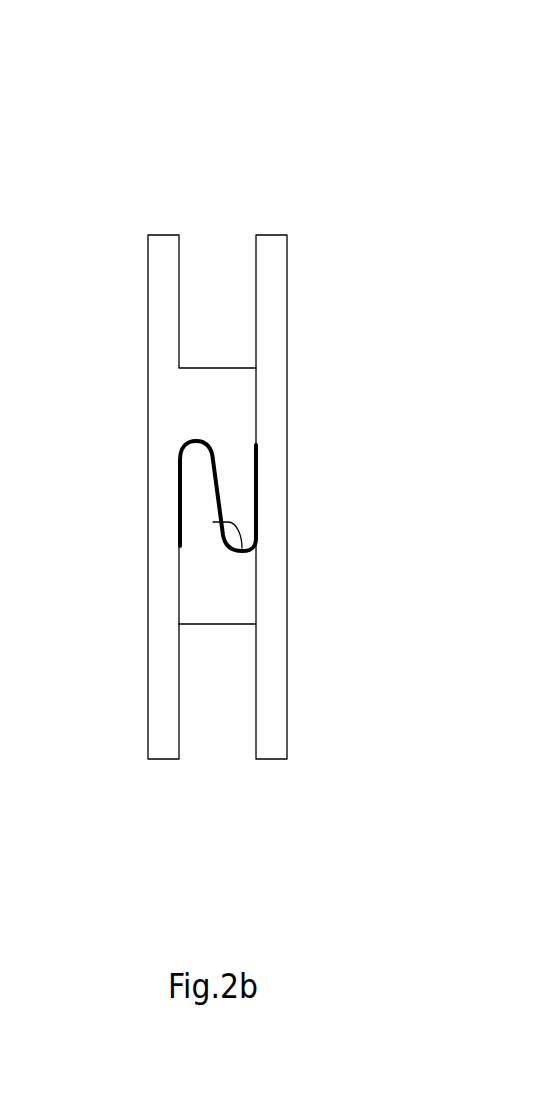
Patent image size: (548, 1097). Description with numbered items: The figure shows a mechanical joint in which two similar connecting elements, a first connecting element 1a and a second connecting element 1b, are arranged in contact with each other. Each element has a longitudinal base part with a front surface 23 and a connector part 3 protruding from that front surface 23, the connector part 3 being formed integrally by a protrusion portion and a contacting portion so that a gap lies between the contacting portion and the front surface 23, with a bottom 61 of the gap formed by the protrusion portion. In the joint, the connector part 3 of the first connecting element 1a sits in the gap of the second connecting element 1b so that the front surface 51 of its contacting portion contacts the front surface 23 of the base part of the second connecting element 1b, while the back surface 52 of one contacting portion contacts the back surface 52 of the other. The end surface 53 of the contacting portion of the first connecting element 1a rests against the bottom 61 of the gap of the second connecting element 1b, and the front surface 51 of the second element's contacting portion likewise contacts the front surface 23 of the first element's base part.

The first connecting element 1a is at (160, 200).
The second connecting element 1b is at (277, 200).
The connector part 3 is at (238, 490).
The front surface 23 is at (179, 532).
The front surface 51 is at (256, 402).
The back surface 52 is at (222, 533).
The end surface 53 is at (213, 522).
The bottom 61 is at (242, 551).